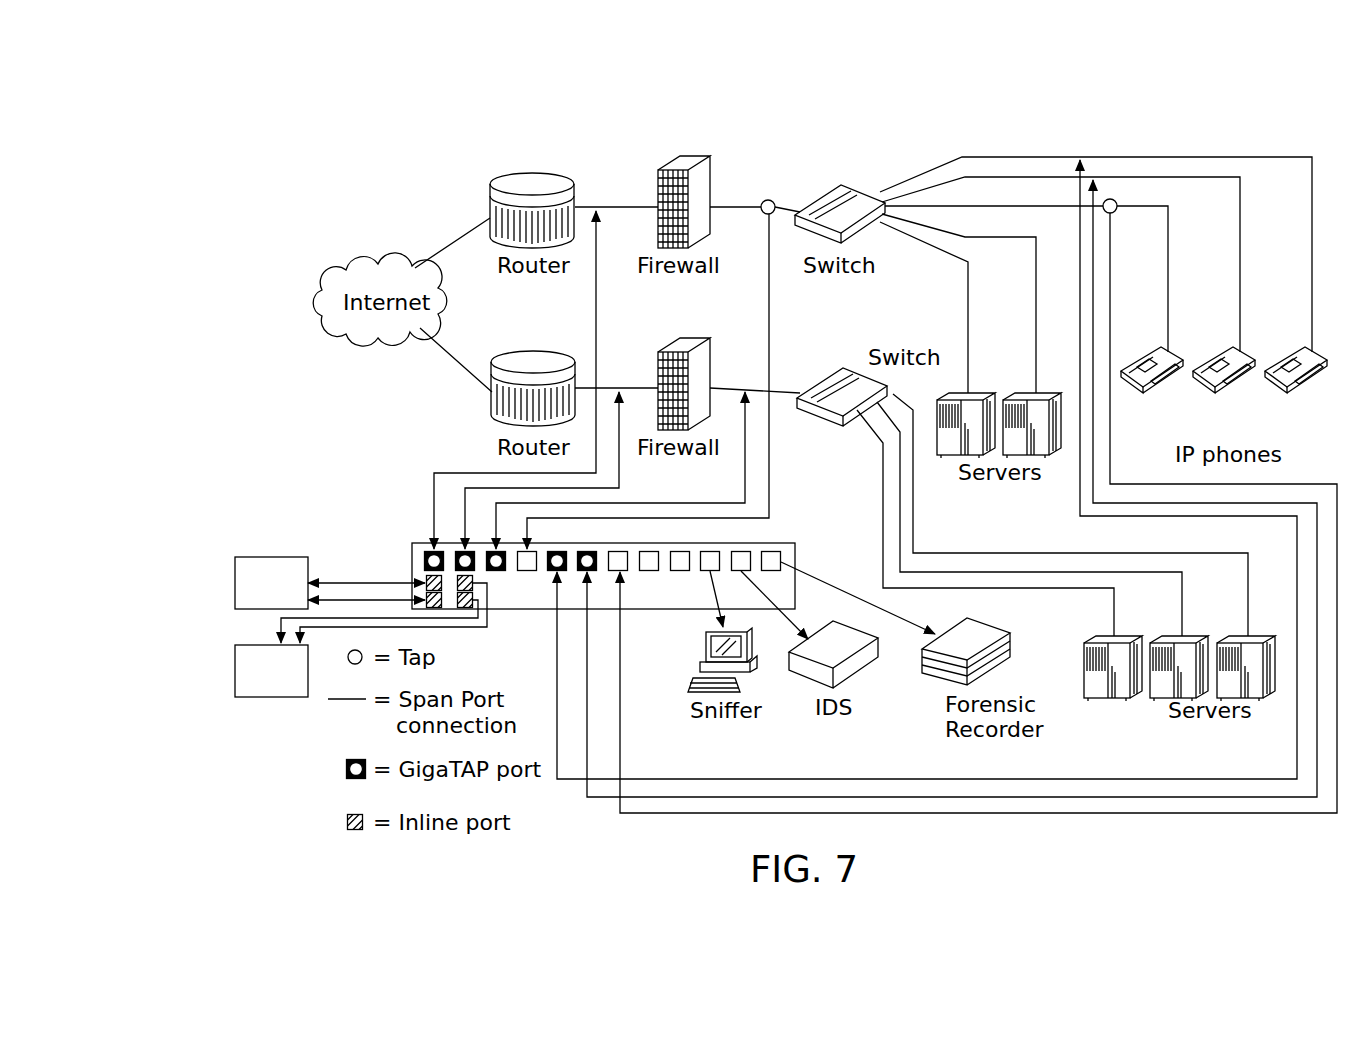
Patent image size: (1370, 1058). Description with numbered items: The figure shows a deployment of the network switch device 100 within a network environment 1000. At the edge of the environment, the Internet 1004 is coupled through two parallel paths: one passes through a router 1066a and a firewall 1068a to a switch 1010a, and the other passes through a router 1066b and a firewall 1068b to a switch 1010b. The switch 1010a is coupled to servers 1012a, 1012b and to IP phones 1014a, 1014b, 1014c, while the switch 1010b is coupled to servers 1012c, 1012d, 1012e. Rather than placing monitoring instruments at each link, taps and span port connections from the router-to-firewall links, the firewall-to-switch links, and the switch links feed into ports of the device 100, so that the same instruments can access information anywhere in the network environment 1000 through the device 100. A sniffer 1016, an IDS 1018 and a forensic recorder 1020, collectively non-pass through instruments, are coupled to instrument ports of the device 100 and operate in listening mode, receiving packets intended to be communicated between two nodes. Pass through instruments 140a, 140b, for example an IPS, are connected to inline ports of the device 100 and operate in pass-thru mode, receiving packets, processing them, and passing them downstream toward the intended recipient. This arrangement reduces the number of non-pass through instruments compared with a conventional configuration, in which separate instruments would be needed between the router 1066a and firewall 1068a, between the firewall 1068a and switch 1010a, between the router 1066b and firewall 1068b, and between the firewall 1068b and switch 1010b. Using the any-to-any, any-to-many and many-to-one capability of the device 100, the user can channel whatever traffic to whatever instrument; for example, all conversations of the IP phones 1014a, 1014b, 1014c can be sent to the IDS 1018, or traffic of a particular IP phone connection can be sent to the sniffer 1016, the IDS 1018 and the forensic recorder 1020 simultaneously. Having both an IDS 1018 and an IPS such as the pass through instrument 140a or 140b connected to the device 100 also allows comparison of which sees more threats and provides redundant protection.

The network environment 1000 is at (1185, 90).
The Internet 1004 is at (378, 262).
The router 1066a is at (532, 172).
The router 1066b is at (533, 350).
The firewall 1068a is at (670, 168).
The firewall 1068b is at (672, 348).
The switch 1010a is at (843, 200).
The switch 1010b is at (840, 385).
The server 1012a is at (948, 455).
The server 1012b is at (1052, 455).
The server 1012c is at (1096, 697).
The server 1012d is at (1165, 697).
The server 1012e is at (1262, 697).
The IP phone 1014a is at (1145, 385).
The IP phone 1014b is at (1225, 385).
The IP phone 1014c is at (1315, 383).
The network switch device 100 is at (418, 572).
The pass through instrument 140a is at (235, 580).
The pass through instrument 140b is at (235, 670).
The sniffer 1016 is at (705, 645).
The IDS 1018 is at (807, 677).
The forensic recorder 1020 is at (922, 672).